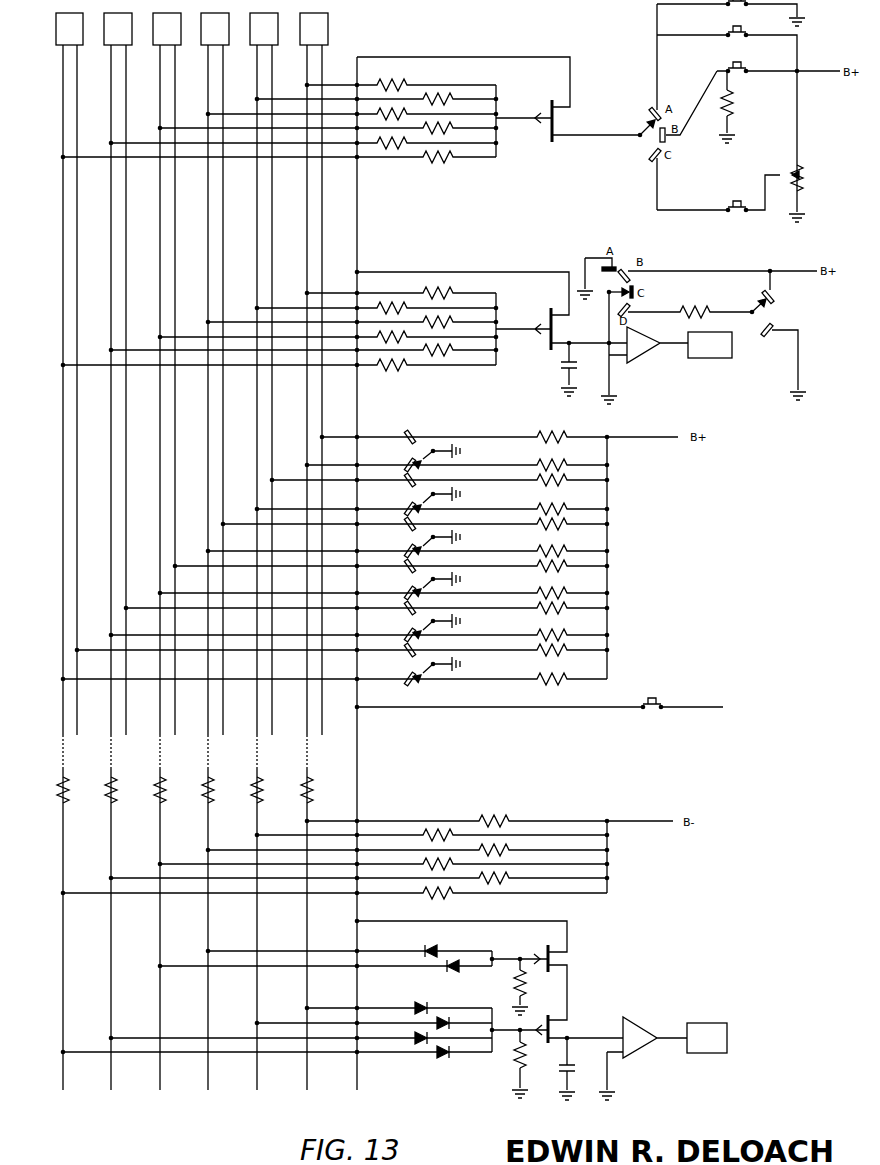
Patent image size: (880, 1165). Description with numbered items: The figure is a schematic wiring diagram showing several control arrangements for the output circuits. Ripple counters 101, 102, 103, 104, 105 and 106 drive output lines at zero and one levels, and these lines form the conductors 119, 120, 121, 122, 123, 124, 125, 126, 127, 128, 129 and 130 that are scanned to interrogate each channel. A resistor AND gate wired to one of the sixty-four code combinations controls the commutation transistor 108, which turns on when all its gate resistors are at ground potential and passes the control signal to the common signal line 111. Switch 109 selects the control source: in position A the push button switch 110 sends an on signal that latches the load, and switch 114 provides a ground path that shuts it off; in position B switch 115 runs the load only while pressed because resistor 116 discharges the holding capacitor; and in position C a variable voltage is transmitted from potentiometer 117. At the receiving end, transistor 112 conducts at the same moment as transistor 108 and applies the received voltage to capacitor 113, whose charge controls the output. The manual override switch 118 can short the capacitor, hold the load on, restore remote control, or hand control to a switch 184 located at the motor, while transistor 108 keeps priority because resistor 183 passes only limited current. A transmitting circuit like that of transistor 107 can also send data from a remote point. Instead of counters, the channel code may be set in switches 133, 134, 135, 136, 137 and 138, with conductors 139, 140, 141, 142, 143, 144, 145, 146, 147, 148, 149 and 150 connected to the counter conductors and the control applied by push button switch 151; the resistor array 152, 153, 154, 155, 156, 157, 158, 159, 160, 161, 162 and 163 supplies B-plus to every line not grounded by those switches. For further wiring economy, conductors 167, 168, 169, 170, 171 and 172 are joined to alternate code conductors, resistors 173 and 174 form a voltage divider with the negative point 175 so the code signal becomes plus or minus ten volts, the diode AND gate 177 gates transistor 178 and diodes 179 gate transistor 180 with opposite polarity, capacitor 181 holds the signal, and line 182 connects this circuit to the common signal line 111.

The ripple counter 101 is at (53, 33).
The ripple counter 102 is at (102, 33).
The ripple counter 103 is at (151, 33).
The ripple counter 104 is at (199, 33).
The ripple counter 105 is at (248, 33).
The ripple counter 106 is at (298, 33).
The transistor 107 is at (512, 121).
The commutation transistor 108 is at (570, 91).
The switch 109 is at (638, 128).
The push button switch 110 is at (747, 20).
The common signal line 111 is at (390, 58).
The transistor 112 is at (546, 308).
The capacitor 113 is at (561, 370).
The switch 114 is at (726, 4).
The switch 115 is at (750, 66).
The resistor 116 is at (736, 107).
The potentiometer 117 is at (803, 177).
The manual control override switch 118 is at (604, 308).
The conductor 119 is at (63, 231).
The conductor 120 is at (77, 231).
The conductor 121 is at (111, 254).
The conductor 122 is at (126, 254).
The conductor 123 is at (160, 231).
The conductor 124 is at (175, 231).
The conductor 125 is at (208, 254).
The conductor 126 is at (223, 254).
The conductor 127 is at (257, 231).
The conductor 128 is at (272, 231).
The conductor 129 is at (307, 254).
The conductor 130 is at (322, 254).
The switch 133 is at (432, 447).
The switch 134 is at (432, 490).
The switch 135 is at (432, 534).
The switch 136 is at (435, 576).
The switch 137 is at (438, 618).
The switch 138 is at (435, 661).
The conductor 139 is at (62, 666).
The conductor 140 is at (77, 666).
The conductor 141 is at (111, 623).
The conductor 142 is at (126, 623).
The conductor 143 is at (160, 582).
The conductor 144 is at (175, 580).
The conductor 145 is at (208, 539).
The conductor 146 is at (223, 538).
The conductor 147 is at (257, 497).
The conductor 148 is at (272, 495).
The conductor 149 is at (307, 453).
The conductor 150 is at (322, 450).
The push button switch 151 is at (665, 699).
The resistor 152 is at (564, 433).
The resistor 153 is at (565, 462).
The resistor 154 is at (565, 478).
The resistor 155 is at (564, 506).
The resistor 156 is at (565, 522).
The resistor 157 is at (564, 548).
The resistor 158 is at (565, 564).
The resistor 159 is at (564, 590).
The resistor 160 is at (565, 606).
The resistor 161 is at (564, 632).
The resistor 162 is at (565, 648).
The resistor 163 is at (565, 677).
The conductor 167 is at (64, 779).
The conductor 168 is at (112, 779).
The conductor 169 is at (161, 779).
The conductor 170 is at (209, 779).
The conductor 171 is at (258, 779).
The conductor 172 is at (308, 780).
The resistor 173 is at (56, 802).
The resistor 174 is at (450, 897).
The negative voltage point 175 is at (615, 819).
The diode AND gate 177 is at (486, 1056).
The transistor 178 is at (556, 1014).
The diodes 179 is at (467, 950).
The transistor 180 is at (556, 945).
The capacitor 181 is at (572, 1064).
The line 182 is at (377, 920).
The resistor 183 is at (429, 272).
The switch 184 is at (779, 311).